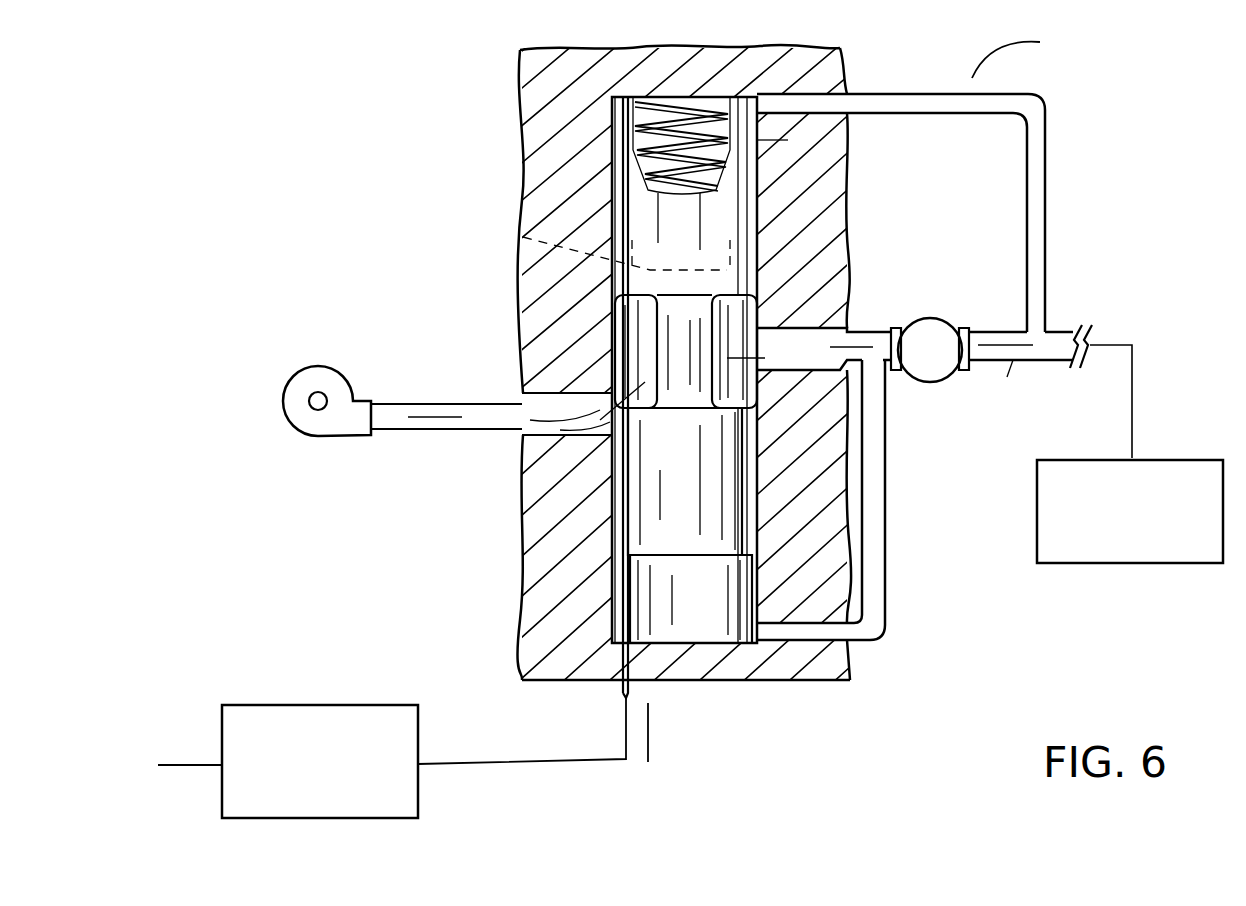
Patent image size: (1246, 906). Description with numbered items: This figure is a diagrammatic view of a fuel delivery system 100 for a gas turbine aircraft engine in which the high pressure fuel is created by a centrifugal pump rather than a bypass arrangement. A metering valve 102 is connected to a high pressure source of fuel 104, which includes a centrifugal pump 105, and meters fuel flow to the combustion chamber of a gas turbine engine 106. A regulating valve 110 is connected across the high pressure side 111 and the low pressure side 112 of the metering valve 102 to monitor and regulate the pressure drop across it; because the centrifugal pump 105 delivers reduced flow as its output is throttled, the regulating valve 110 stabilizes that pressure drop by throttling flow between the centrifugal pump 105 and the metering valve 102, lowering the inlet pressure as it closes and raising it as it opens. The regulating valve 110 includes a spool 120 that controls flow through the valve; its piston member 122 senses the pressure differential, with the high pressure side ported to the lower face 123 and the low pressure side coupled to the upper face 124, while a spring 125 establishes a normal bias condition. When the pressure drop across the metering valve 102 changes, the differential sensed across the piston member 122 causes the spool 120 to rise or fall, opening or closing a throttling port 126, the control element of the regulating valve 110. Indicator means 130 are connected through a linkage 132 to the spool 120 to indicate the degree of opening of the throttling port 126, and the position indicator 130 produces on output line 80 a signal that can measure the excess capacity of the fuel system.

The output line 80 is at (178, 762).
The fuel delivery system 100 is at (1034, 54).
The metering valve 102 is at (950, 378).
The high pressure source of fuel 104 is at (537, 422).
The centrifugal pump 105 is at (342, 437).
The gas turbine engine 106 is at (1168, 460).
The regulating valve 110 is at (520, 50).
The high pressure side 111 is at (840, 362).
The low pressure side 112 is at (1080, 332).
The spool 120 is at (617, 202).
The piston member 122 is at (615, 335).
The lower face 123 is at (815, 255).
The upper face 124 is at (523, 237).
The spring 125 is at (637, 128).
The throttling port 126 is at (527, 448).
The indicator means 130 is at (393, 705).
The linkage 132 is at (608, 762).